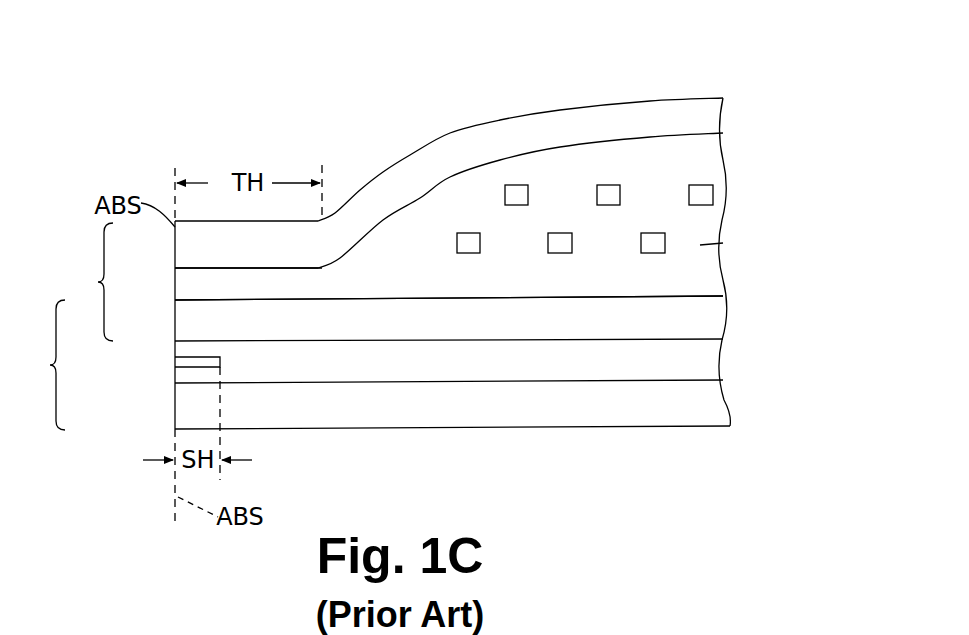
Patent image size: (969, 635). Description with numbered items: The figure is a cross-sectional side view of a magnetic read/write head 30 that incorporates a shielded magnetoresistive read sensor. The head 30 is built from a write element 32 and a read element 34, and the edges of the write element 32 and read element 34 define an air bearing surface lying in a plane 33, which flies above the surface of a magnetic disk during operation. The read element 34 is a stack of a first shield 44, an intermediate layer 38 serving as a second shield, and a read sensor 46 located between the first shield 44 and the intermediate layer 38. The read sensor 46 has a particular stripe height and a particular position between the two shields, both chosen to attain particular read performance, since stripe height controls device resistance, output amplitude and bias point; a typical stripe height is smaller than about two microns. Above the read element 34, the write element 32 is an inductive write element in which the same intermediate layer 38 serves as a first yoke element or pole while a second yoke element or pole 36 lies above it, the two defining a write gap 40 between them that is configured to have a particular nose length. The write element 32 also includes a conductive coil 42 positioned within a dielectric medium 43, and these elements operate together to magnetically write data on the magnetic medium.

The magnetic read/write head 30 is at (722, 63).
The write element 32 is at (89, 282).
The plane 33 is at (172, 168).
The read element 34 is at (39, 365).
The second yoke element or pole 36 is at (480, 137).
The intermediate layer 38 is at (713, 318).
The write gap 40 is at (202, 285).
The conductive coil 42 is at (703, 193).
The dielectric medium 43 is at (712, 245).
The first shield 44 is at (603, 407).
The read sensor 46 is at (175, 360).